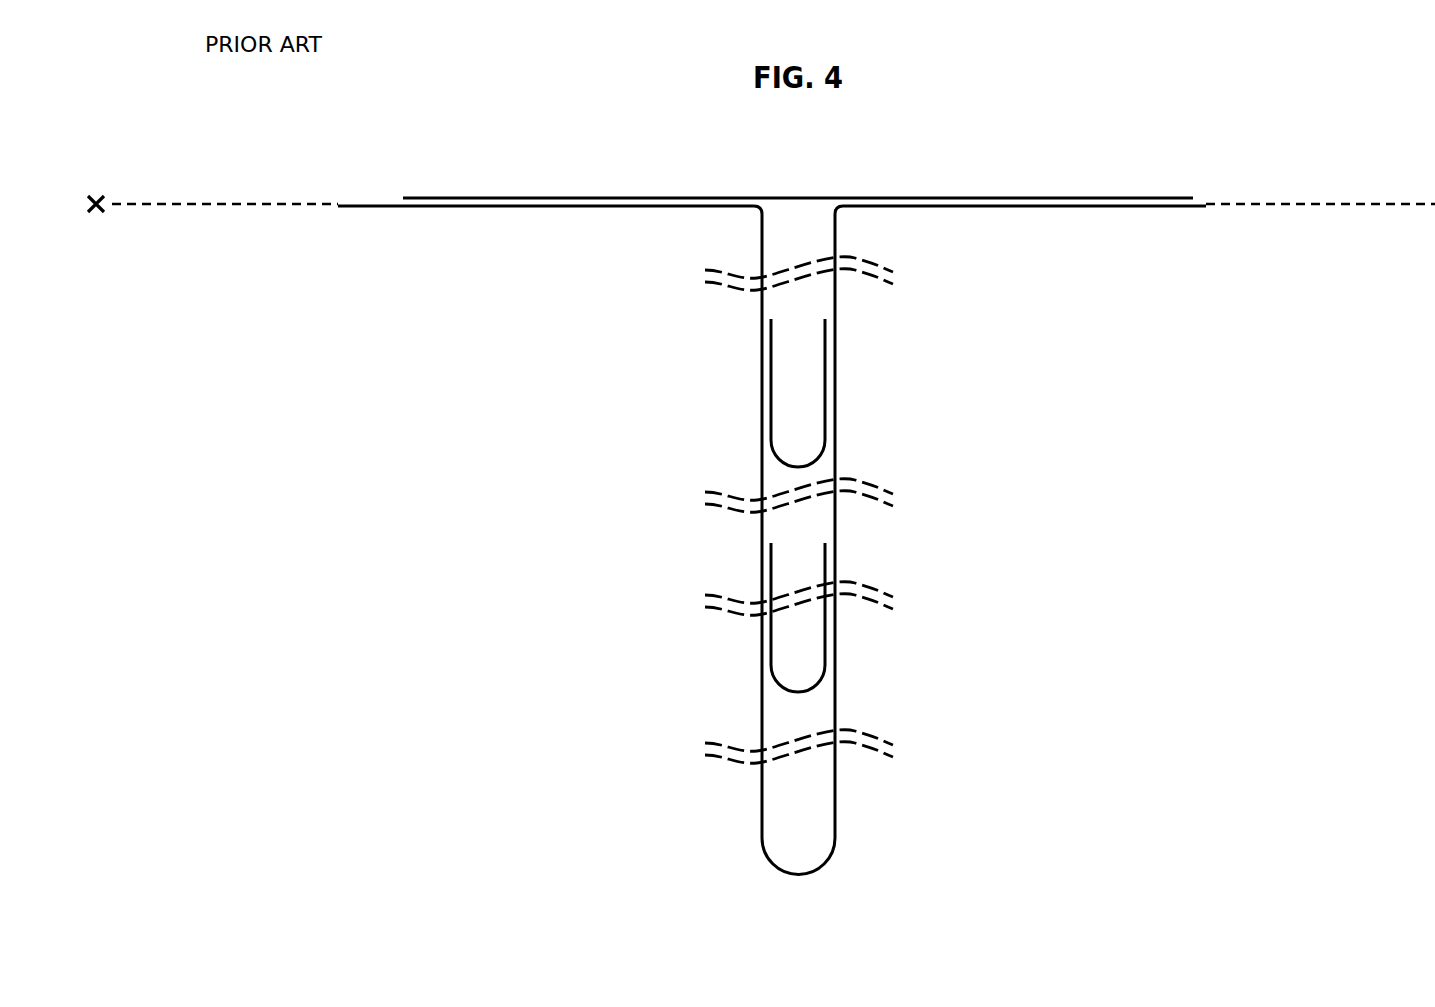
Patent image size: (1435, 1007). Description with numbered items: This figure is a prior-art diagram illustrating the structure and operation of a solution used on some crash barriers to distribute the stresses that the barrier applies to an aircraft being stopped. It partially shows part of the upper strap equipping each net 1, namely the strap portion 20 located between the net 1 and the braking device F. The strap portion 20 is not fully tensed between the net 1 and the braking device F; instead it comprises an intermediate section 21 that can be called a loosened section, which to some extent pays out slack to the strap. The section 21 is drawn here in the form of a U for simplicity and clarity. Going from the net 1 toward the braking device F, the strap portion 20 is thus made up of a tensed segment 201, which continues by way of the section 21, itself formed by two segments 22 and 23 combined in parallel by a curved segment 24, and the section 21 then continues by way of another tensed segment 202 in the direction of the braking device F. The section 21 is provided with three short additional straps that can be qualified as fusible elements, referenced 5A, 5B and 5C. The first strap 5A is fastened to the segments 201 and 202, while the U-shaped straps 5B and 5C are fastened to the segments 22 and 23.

The net 1 is at (97, 186).
The braking device F is at (1312, 184).
The first strap 5A is at (798, 196).
The strap 5B is at (818, 452).
The strap 5C is at (773, 637).
The strap portion 20 is at (772, 244).
The tensed segment 201 is at (560, 208).
The tensed segment 202 is at (1028, 208).
The intermediate section 21 is at (819, 579).
The segment 22 is at (762, 797).
The segment 23 is at (835, 797).
The curved segment 24 is at (798, 876).